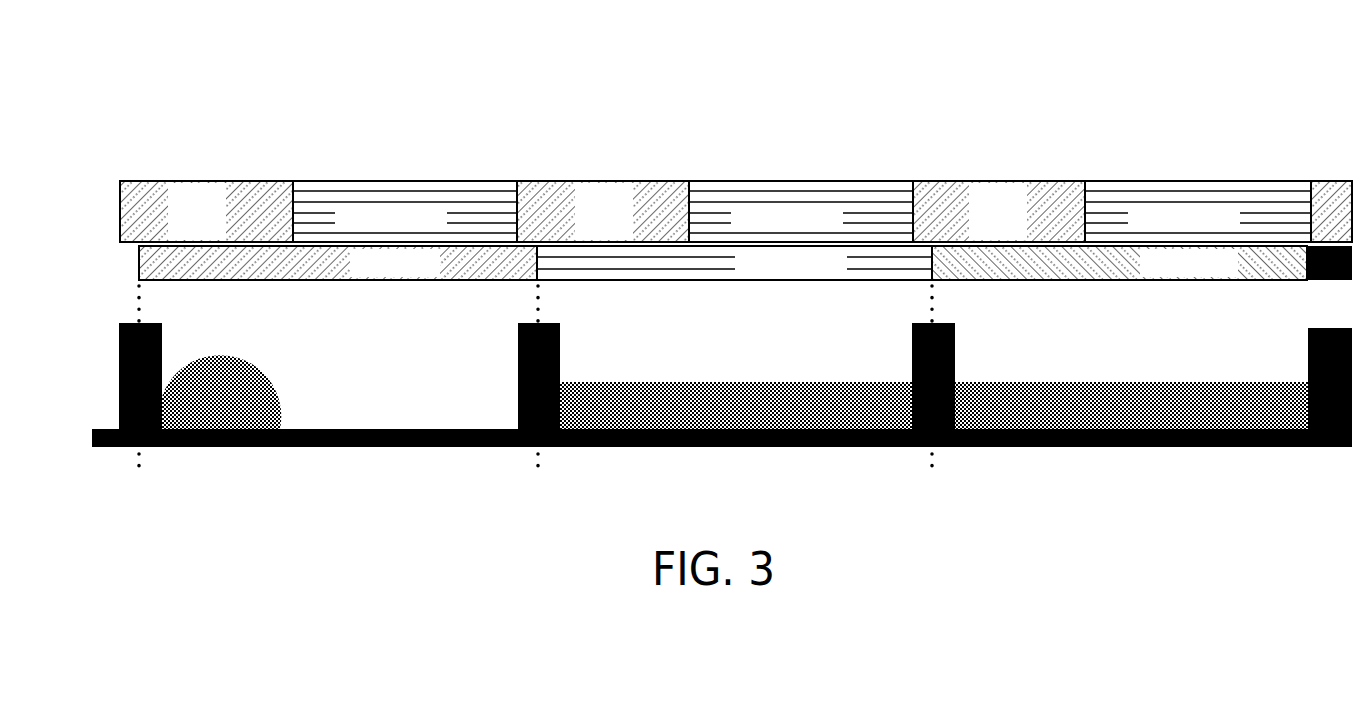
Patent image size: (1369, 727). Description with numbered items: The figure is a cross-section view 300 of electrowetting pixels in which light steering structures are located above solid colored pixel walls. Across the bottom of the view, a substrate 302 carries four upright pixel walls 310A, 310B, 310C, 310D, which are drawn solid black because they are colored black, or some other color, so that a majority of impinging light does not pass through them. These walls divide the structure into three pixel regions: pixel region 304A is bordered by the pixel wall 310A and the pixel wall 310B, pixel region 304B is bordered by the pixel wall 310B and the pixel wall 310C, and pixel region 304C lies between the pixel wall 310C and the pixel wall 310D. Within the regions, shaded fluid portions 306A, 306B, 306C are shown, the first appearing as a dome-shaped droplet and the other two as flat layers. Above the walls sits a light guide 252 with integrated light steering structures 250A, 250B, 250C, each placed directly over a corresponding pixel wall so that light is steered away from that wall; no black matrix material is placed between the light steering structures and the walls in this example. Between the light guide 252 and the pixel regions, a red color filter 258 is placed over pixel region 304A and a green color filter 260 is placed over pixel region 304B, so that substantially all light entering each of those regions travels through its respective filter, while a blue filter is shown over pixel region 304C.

The cross-section view 300 is at (202, 98).
The light steering structure 250A is at (206, 211).
The light steering structure 250B is at (603, 211).
The light steering structure 250C is at (999, 211).
The light guide 252 is at (802, 211).
The red color filter 258 is at (338, 263).
The green color filter 260 is at (734, 263).
The substrate 302 is at (316, 490).
The pixel region 304A is at (340, 376).
The pixel region 304B is at (736, 376).
The pixel region 304C is at (1131, 376).
The first fluid / material 306A is at (214, 447).
The second fluid / material 306B is at (648, 414).
The third fluid / material 306C is at (1032, 414).
The pixel wall 310A is at (119, 410).
The pixel wall 310B is at (518, 407).
The pixel wall 310C is at (912, 410).
The pixel wall 310D is at (1308, 410).